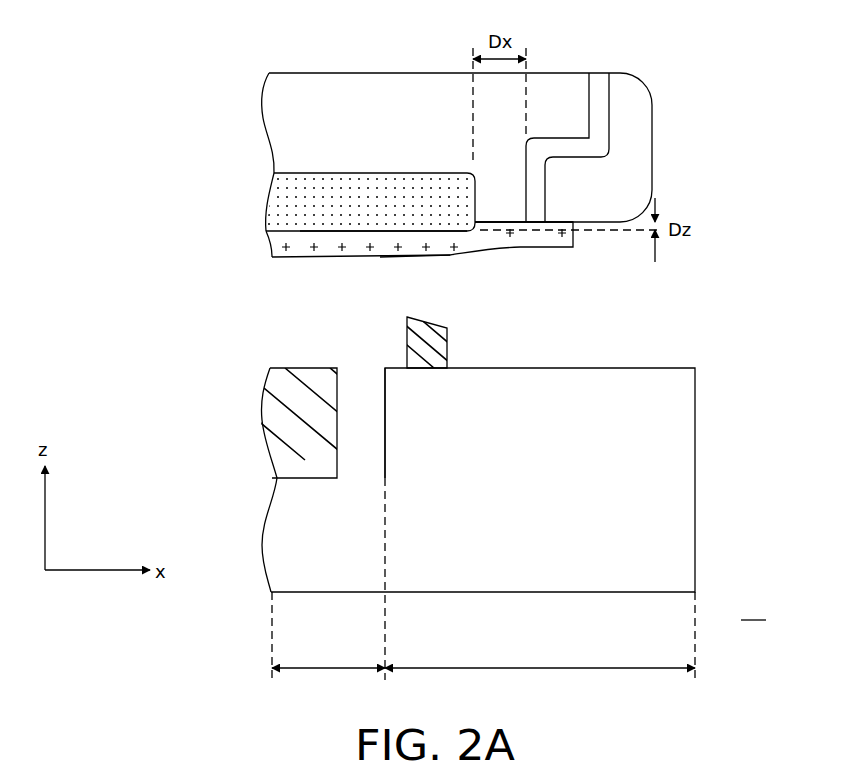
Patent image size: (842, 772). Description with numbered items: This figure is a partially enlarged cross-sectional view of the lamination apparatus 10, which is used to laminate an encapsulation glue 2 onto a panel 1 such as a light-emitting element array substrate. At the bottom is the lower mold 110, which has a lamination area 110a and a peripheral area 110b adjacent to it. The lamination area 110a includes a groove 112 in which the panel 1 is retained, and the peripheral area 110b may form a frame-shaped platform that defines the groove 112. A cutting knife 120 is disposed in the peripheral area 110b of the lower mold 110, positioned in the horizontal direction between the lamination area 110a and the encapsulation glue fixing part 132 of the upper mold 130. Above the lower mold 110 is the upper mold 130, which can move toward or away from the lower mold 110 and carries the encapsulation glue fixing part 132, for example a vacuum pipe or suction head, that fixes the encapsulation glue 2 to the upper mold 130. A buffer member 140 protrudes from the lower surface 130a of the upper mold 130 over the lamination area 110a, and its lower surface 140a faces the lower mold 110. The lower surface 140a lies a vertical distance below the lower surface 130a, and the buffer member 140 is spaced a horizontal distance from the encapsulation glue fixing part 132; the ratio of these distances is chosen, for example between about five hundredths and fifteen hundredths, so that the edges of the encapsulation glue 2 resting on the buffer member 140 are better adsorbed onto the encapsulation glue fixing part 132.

The lamination apparatus 10 is at (754, 607).
The lower mold 110 is at (287, 538).
The lamination area 110a is at (328, 591).
The peripheral area 110b is at (540, 648).
The groove 112 is at (383, 415).
The panel 1 is at (313, 430).
The cutting knife 120 is at (430, 355).
The upper mold 130 is at (283, 116).
The lower surface of the upper mold 130a is at (489, 228).
The encapsulation glue fixing part 132 is at (536, 226).
The buffer member 140 is at (280, 207).
The lower surface of the buffer member 140a is at (352, 236).
The encapsulation glue 2 is at (423, 246).